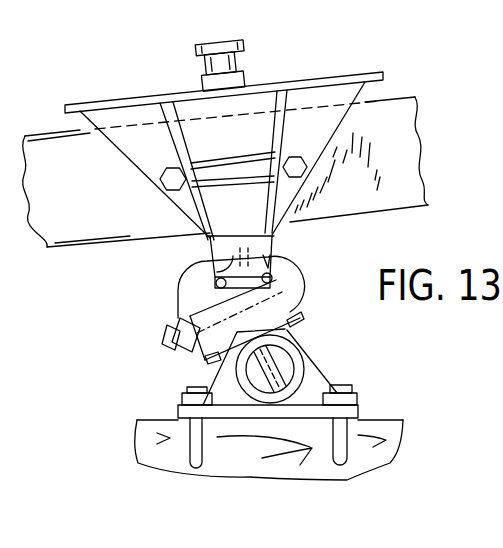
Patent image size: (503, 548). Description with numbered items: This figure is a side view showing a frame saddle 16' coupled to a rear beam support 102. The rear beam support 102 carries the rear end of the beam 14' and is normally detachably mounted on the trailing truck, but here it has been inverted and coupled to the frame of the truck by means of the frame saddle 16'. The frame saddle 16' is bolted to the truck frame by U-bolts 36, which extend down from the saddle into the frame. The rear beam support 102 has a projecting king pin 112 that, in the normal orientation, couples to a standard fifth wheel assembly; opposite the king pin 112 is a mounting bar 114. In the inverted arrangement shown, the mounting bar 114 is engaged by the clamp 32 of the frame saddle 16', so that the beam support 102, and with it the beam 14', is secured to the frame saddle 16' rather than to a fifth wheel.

The beam 14' is at (248, 174).
The rear beam support 102 is at (348, 75).
The king pin 112 is at (238, 44).
The mounting bar 114 is at (197, 250).
The clamp 32 is at (297, 271).
The frame saddle 16' is at (294, 373).
The U-bolts 36 is at (192, 467).